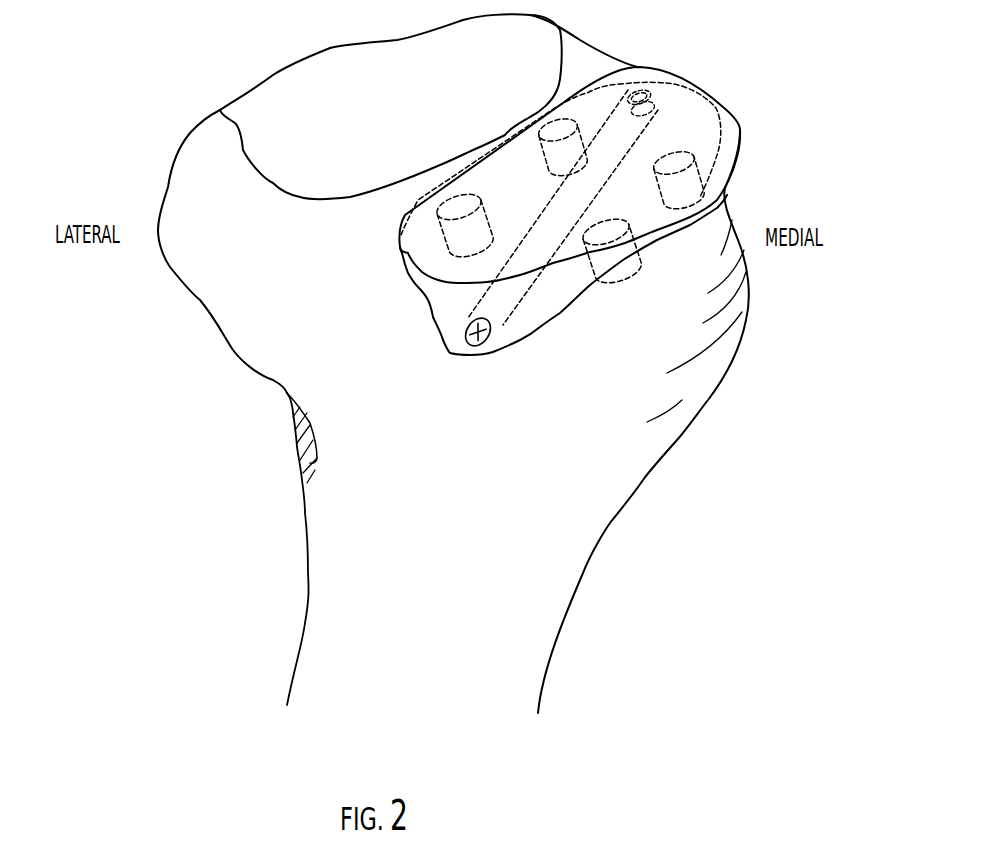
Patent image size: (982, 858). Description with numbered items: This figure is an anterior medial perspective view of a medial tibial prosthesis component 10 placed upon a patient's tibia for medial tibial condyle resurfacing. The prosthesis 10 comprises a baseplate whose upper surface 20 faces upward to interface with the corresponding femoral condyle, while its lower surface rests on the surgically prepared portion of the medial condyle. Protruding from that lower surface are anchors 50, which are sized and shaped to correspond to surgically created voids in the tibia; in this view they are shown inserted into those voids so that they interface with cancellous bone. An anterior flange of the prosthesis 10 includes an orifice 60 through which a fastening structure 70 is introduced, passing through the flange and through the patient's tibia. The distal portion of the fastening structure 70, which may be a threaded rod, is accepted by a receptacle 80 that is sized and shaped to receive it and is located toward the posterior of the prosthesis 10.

The medial tibial prosthesis component 10 is at (743, 90).
The upper surface 20 is at (507, 160).
The anchor 50 is at (687, 177).
The orifice 60 is at (492, 332).
The fastening structure 70 is at (550, 257).
The receptacle 80 is at (653, 102).